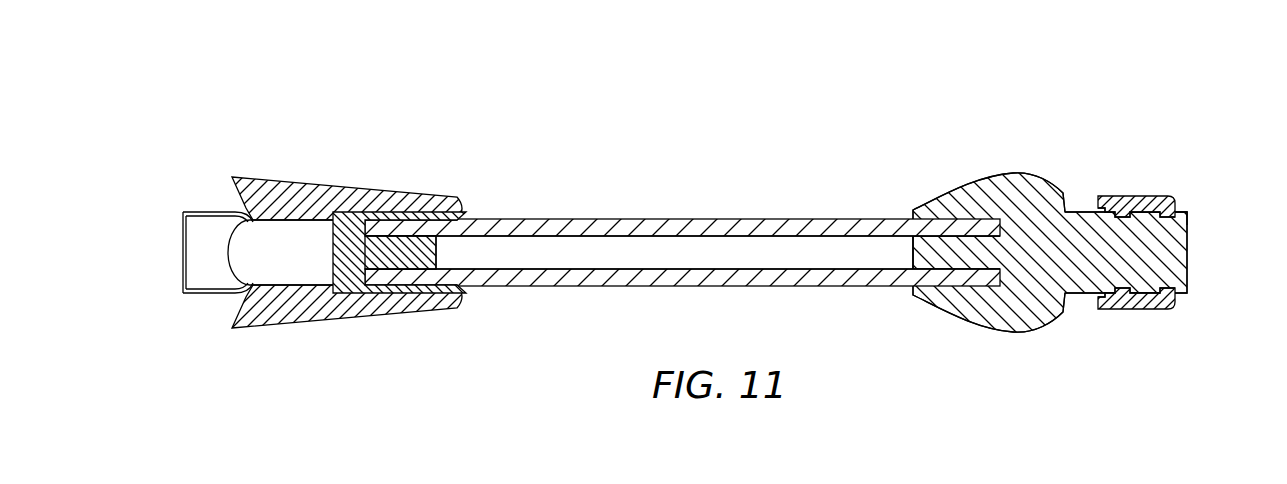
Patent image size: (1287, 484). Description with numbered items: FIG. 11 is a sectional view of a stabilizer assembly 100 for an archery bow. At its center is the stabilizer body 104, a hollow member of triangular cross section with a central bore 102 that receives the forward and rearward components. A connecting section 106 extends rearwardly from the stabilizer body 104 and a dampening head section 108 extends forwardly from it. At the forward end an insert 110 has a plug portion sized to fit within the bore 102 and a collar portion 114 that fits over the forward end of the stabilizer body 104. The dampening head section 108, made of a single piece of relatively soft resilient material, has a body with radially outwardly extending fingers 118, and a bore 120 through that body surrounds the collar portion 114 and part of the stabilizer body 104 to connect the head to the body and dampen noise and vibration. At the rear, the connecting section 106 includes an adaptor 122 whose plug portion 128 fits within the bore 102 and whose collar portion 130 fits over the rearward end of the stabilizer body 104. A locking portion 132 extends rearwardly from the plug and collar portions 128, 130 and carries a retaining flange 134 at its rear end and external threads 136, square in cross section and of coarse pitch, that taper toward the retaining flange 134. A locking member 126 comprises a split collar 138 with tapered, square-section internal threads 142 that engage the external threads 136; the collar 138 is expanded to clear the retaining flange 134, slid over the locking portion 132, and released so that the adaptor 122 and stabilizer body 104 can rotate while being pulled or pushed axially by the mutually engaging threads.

The stabilizer assembly 100 is at (525, 100).
The central bore 102 is at (702, 258).
The stabilizer body 104 is at (583, 218).
The connecting section 106 is at (1060, 215).
The dampening head section 108 is at (357, 186).
The insert 110 is at (403, 240).
The collar portion 114 is at (347, 323).
The fingers 118 is at (347, 250).
The bore 120 is at (257, 247).
The adaptor 122 is at (980, 187).
The locking member 126 is at (1138, 195).
The plug portion 128 is at (933, 262).
The collar portion 130 is at (925, 200).
The locking portion 132 is at (1147, 253).
The retaining flange 134 is at (1178, 208).
The external threads 136 is at (1133, 293).
The collar 138 is at (1113, 196).
The internal threads 142 is at (1158, 275).